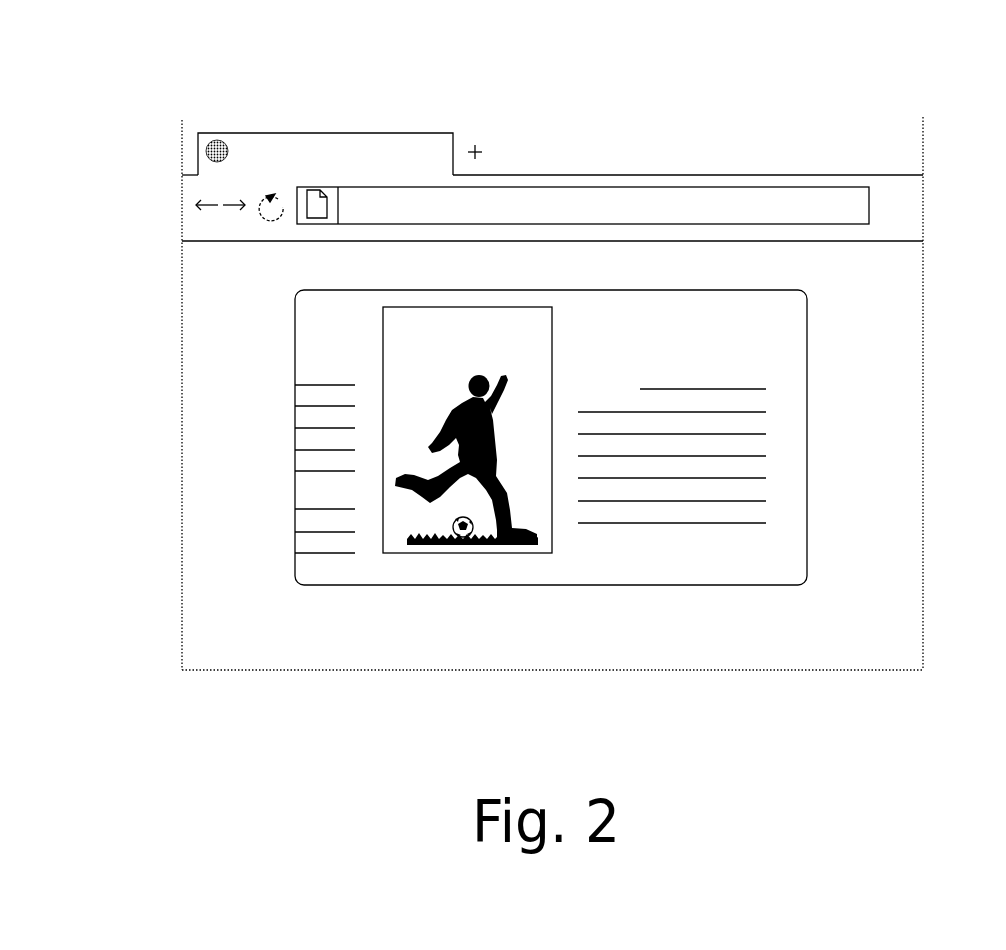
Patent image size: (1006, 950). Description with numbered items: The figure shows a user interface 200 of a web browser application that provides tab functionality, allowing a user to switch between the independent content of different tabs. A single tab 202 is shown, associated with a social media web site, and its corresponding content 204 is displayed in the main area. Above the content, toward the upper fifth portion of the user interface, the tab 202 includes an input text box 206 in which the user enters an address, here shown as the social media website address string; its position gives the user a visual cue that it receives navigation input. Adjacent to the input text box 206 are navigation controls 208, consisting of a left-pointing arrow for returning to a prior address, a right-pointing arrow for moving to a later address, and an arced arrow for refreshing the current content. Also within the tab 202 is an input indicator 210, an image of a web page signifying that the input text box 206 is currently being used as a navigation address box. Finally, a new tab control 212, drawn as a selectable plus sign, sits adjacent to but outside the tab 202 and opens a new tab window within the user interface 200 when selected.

The user interface 200 is at (887, 74).
The tab 202 is at (233, 124).
The content 204 is at (286, 349).
The input text box 206 is at (755, 177).
The navigation controls 208 is at (216, 223).
The input indicator 210 is at (306, 233).
The new tab control 212 is at (488, 131).